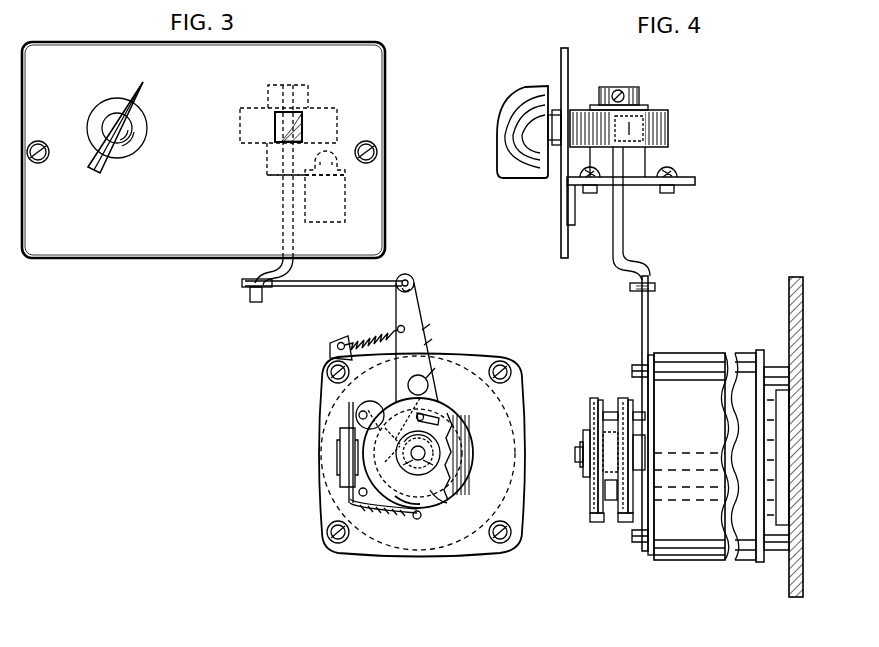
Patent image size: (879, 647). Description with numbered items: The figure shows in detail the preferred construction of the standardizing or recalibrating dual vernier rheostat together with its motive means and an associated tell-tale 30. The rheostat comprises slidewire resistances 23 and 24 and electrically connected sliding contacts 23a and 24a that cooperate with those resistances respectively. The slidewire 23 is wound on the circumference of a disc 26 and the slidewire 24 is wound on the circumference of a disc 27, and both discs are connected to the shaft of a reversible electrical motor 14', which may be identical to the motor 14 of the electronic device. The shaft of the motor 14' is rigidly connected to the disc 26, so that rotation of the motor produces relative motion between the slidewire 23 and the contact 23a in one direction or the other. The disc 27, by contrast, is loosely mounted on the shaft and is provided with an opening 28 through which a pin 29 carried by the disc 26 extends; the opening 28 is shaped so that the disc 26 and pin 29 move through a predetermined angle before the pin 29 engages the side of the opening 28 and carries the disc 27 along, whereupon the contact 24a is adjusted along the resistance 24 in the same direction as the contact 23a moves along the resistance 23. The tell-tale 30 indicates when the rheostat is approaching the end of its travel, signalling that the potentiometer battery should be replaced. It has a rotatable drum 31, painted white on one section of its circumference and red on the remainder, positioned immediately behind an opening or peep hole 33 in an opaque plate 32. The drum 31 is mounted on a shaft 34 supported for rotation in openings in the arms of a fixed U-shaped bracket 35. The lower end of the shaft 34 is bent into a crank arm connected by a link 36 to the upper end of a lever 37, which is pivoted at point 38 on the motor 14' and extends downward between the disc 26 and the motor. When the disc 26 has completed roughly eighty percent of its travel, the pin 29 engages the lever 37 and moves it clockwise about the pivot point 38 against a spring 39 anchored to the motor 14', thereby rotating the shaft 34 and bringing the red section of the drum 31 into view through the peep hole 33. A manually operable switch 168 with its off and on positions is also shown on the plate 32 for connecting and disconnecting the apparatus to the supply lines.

In FIG. 4, the reversible electrical motor 14' is at (721, 441).
In FIG. 4, the motor 14 is at (721, 441).
In FIG. 3, the slidewire resistance 23 is at (468, 432).
In FIG. 4, the slidewire resistance 23 is at (630, 389).
In FIG. 4, the sliding contact 23a is at (630, 524).
In FIG. 3, the slidewire resistance 24 is at (392, 406).
In FIG. 4, the slidewire resistance 24 is at (592, 403).
In FIG. 3, the sliding contact 24a is at (419, 520).
In FIG. 4, the sliding contact 24a is at (590, 522).
In FIG. 3, the disc 26 is at (462, 445).
In FIG. 4, the disc 26 is at (612, 513).
In FIG. 3, the disc 27 is at (440, 503).
In FIG. 4, the disc 27 is at (590, 492).
In FIG. 3, the opening 28 is at (432, 413).
In FIG. 3, the pin 29 is at (444, 418).
In FIG. 4, the pin 29 is at (610, 413).
In FIG. 3, the tell-tale 30 is at (327, 169).
In FIG. 4, the tell-tale 30 is at (650, 183).
In FIG. 3, the rotatable drum 31 is at (240, 126).
In FIG. 4, the rotatable drum 31 is at (668, 129).
In FIG. 3, the opaque plate 32 is at (320, 48).
In FIG. 4, the opaque plate 32 is at (561, 64).
In FIG. 3, the opening 33 is at (302, 125).
In FIG. 3, the shaft 34 is at (283, 199).
In FIG. 4, the shaft 34 is at (623, 160).
In FIG. 3, the U-shaped bracket 35 is at (267, 160).
In FIG. 4, the U-shaped bracket 35 is at (640, 168).
In FIG. 3, the link 36 is at (312, 290).
In FIG. 3, the lever 37 is at (421, 308).
In FIG. 4, the lever 37 is at (642, 320).
In FIG. 3, the pivot point 38 is at (428, 382).
In FIG. 3, the spring 39 is at (362, 333).
In FIG. 3, the manually operable switch 168 is at (137, 150).
In FIG. 4, the manually operable switch 168 is at (500, 145).